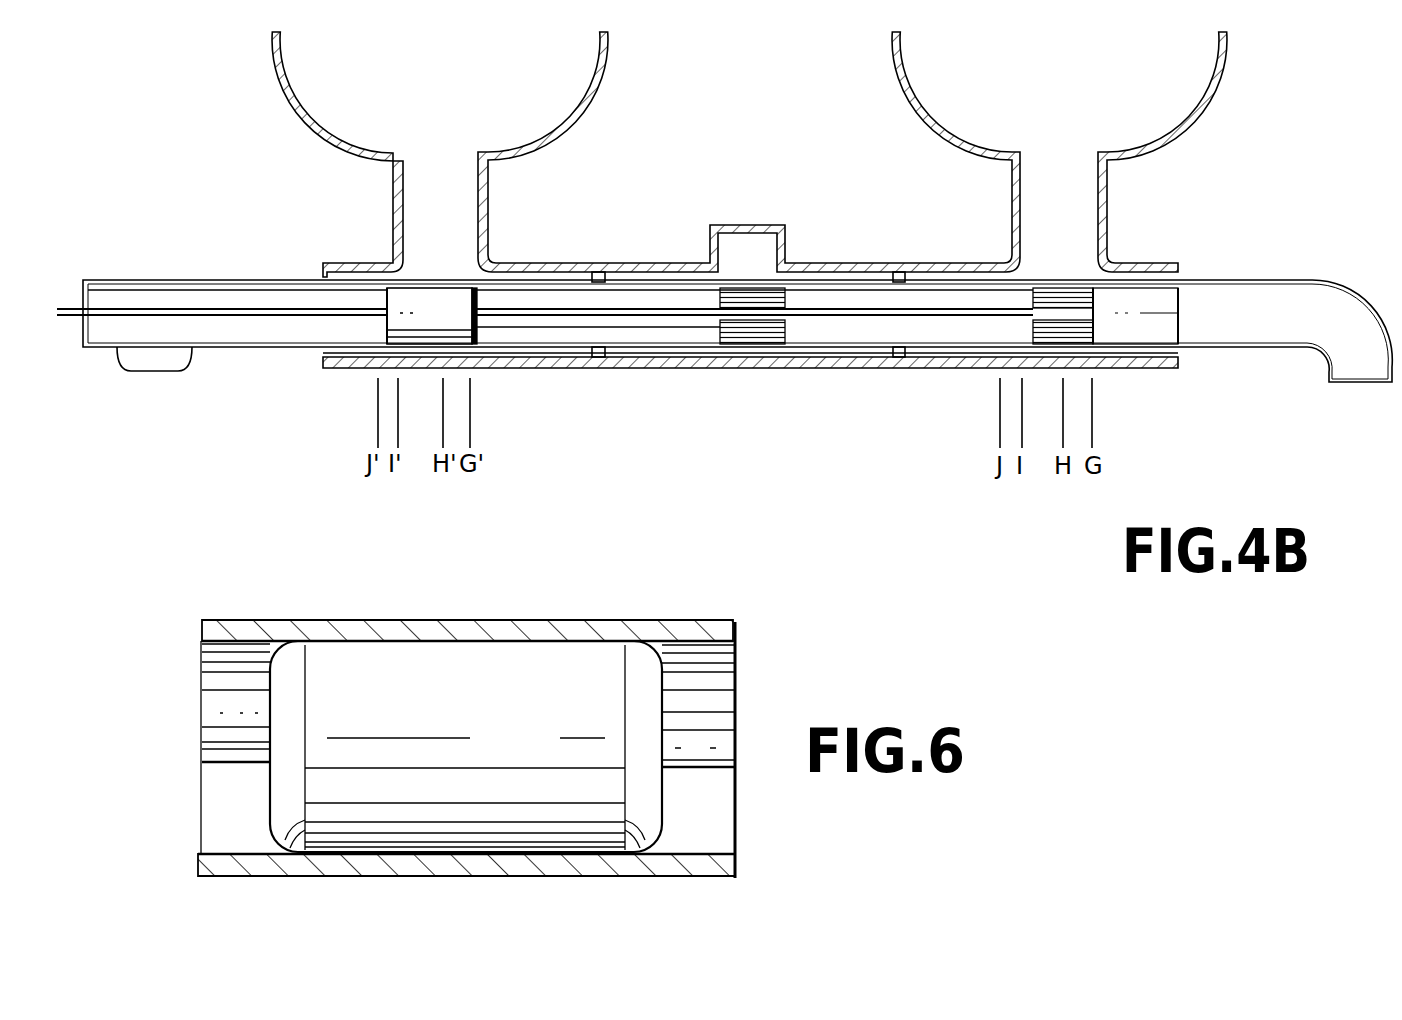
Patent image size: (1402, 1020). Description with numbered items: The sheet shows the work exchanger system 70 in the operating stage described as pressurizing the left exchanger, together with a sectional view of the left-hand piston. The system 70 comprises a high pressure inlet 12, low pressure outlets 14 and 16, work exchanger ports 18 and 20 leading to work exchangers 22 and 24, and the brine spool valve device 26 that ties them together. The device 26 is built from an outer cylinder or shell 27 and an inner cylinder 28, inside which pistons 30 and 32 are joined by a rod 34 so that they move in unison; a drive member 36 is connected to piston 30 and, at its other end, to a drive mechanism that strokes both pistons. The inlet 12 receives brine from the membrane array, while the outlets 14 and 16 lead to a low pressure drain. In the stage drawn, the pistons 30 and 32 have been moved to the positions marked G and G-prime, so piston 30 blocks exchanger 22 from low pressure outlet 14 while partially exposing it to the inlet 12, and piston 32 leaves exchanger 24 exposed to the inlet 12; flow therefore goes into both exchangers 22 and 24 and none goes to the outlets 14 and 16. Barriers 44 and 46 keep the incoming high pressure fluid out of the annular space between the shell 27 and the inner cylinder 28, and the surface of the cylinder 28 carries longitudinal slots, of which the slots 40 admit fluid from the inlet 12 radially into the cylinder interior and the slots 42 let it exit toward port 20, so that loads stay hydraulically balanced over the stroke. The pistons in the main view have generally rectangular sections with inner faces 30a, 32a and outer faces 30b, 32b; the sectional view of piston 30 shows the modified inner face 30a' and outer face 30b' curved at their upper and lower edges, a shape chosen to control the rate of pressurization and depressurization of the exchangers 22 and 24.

In FIG. 4B, the high pressure inlet 12 is at (748, 242).
In FIG. 4B, the low pressure outlet 14 is at (153, 360).
In FIG. 4B, the low pressure outlet 16 is at (1366, 375).
In FIG. 4B, the work exchanger port 18 is at (432, 233).
In FIG. 4B, the work exchanger port 20 is at (1078, 240).
In FIG. 4B, the work exchanger 22 is at (278, 88).
In FIG. 4B, the work exchanger 24 is at (895, 80).
In FIG. 4B, the brine spool valve device 26 is at (778, 140).
In FIG. 4B, the outer cylinder or shell 27 is at (818, 266).
In FIG. 4B, the inner cylinder 28 is at (640, 267).
In FIG. 4B, the piston 30 is at (403, 305).
In FIG. 6, the piston 30 is at (457, 668).
In FIG. 4B, the inner face of piston 30 30a is at (508, 348).
In FIG. 4B, the outer face of piston 30 30b is at (342, 345).
In FIG. 6, the inner face of piston 30 (modified) 30a' is at (692, 702).
In FIG. 6, the outer face of piston 30 (modified) 30b' is at (245, 701).
In FIG. 4B, the piston 32 is at (1120, 330).
In FIG. 4B, the inner face of piston 32 32a is at (1098, 332).
In FIG. 4B, the outer face of piston 32 32b is at (1170, 307).
In FIG. 4B, the rod 34 is at (672, 323).
In FIG. 6, the rod 34 is at (698, 745).
In FIG. 4B, the drive member 36 is at (64, 305).
In FIG. 6, the drive member 36 is at (222, 742).
In FIG. 4B, the longitudinal slots 40 is at (757, 330).
In FIG. 4B, the longitudinal slots 42 is at (1045, 308).
In FIG. 4B, the barriers 44 is at (598, 272).
In FIG. 4B, the barriers 46 is at (897, 272).
In FIG. 4B, the work exchanger system 70 is at (1278, 157).